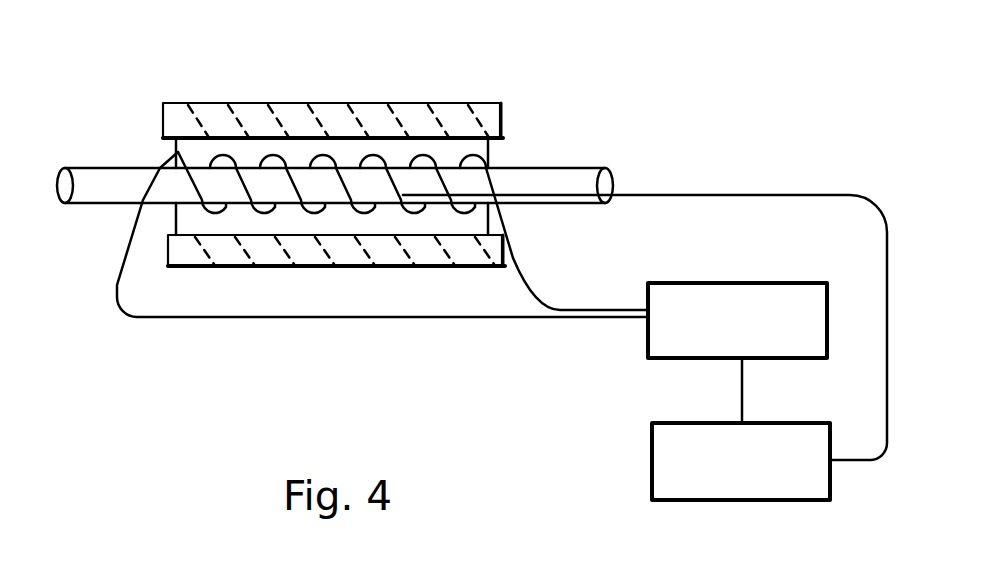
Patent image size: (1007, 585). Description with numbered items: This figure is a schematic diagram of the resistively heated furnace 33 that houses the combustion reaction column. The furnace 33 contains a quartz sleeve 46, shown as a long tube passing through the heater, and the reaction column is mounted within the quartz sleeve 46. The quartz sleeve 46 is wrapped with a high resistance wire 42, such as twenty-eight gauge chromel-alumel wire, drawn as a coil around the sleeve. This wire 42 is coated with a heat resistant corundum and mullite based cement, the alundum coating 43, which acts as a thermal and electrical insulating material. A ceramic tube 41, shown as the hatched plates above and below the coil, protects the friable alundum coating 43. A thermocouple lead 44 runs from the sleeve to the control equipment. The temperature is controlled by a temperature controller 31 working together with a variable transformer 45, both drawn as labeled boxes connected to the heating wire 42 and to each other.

The temperature controller 31 is at (777, 500).
The resistively heated furnace 33 is at (413, 65).
The ceramic tube 41 is at (247, 266).
The high resistance wire 42 is at (336, 203).
The alundum coating 43 is at (185, 220).
The thermocouple wire 44 is at (692, 195).
The variable transformer 45 is at (747, 283).
The quartz sleeve 46 is at (563, 169).